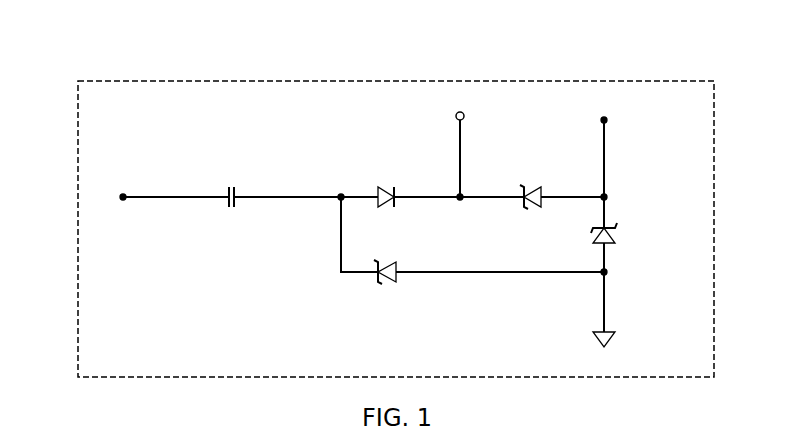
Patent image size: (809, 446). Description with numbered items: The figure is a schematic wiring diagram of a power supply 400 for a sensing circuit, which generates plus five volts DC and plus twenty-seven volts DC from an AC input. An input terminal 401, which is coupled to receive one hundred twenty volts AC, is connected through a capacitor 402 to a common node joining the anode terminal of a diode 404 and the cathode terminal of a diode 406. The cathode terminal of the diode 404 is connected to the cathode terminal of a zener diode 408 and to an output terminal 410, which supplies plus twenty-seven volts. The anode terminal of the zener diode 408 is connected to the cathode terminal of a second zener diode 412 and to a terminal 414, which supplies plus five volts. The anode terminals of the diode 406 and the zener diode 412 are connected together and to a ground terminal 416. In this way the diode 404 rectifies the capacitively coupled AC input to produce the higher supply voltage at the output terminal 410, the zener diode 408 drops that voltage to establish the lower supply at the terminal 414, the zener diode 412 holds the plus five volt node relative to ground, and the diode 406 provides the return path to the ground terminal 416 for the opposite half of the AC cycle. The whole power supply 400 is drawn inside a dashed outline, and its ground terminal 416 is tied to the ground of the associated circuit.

The power supply 400 is at (132, 54).
The input terminal 401 is at (123, 201).
The capacitor 402 is at (233, 186).
The diode 404 is at (389, 186).
The diode 406 is at (388, 284).
The zener diode 408 is at (531, 189).
The output terminal 410 is at (456, 119).
The zener diode 412 is at (612, 233).
The terminal 414 is at (607, 122).
The ground terminal 416 is at (612, 343).